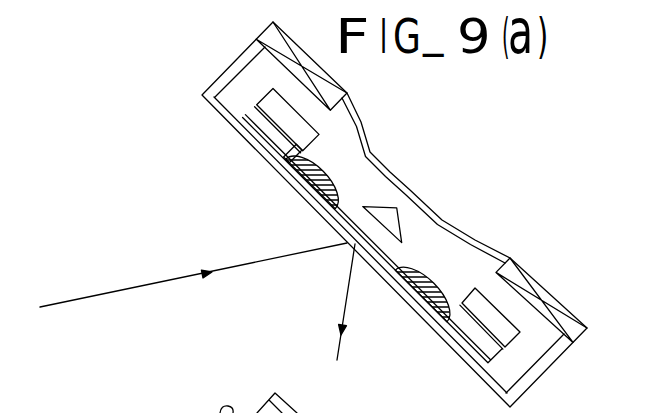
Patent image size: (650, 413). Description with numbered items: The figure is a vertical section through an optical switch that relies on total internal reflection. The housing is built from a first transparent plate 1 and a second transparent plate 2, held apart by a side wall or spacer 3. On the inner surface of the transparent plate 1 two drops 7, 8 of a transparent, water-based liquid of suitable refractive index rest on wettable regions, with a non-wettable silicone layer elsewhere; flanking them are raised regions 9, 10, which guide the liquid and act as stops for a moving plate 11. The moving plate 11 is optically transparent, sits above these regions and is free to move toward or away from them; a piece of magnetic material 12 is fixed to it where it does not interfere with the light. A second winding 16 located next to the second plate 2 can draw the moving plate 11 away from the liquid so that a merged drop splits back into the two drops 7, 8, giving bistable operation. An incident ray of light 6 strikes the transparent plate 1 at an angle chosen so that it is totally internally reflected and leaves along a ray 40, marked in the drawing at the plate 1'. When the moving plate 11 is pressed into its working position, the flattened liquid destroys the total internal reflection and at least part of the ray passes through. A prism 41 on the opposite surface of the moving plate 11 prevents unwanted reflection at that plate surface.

The transparent plate 1 is at (381, 214).
The optical axis 1' is at (352, 221).
The second transparent plate 2 is at (404, 197).
The side wall or spacer 3 is at (238, 70).
The ray of light 6 is at (108, 290).
The drop of liquid 7 is at (297, 186).
The drop of liquid 8 is at (410, 302).
The raised region 9 is at (245, 116).
The raised region 10 is at (472, 340).
The moving plate 11 is at (312, 152).
The piece of magnetic material 12 is at (470, 290).
The second winding 16 is at (277, 32).
The ray 40 is at (350, 306).
The prism 41 is at (385, 207).